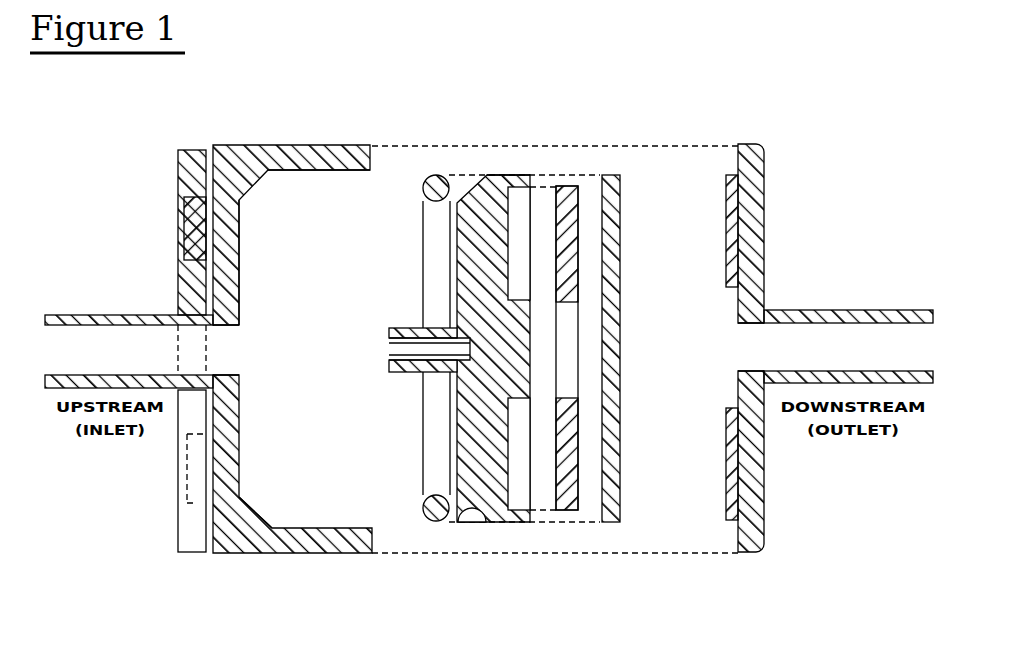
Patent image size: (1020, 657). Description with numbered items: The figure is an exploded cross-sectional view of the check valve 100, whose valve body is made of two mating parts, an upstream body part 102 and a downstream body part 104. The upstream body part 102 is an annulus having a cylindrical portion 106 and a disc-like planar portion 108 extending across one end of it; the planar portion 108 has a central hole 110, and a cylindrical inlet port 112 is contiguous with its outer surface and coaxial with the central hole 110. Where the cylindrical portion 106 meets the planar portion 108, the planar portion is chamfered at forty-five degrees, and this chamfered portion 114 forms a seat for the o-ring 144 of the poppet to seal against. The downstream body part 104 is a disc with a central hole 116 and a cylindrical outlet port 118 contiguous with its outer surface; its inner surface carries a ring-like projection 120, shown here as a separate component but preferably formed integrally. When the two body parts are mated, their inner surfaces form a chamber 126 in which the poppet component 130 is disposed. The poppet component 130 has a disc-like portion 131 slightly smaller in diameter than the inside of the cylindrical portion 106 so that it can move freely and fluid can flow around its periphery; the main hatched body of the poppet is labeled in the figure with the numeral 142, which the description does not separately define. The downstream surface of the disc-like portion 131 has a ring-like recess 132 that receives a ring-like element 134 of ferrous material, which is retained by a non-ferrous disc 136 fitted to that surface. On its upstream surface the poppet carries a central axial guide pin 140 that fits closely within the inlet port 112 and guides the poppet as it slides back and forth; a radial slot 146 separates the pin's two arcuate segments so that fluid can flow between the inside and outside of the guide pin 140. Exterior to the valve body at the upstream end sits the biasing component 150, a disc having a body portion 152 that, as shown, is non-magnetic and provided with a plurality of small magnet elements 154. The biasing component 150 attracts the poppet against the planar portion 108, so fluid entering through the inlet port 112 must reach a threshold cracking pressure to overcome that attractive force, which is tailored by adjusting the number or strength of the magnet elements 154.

The check valve 100 is at (321, 60).
The upstream body part 102 is at (320, 136).
The downstream body part 104 is at (752, 136).
The cylindrical portion 106 is at (288, 172).
The disc-like planar portion 108 is at (239, 275).
The central hole 110 is at (239, 325).
The cylindrical inlet port 112 is at (52, 314).
The chamfered portion 114 is at (254, 512).
The central hole 116 is at (750, 325).
The cylindrical outlet port 118 is at (813, 310).
The ring-like projection 120 is at (726, 245).
The chamber 126 is at (332, 444).
The poppet component 130 is at (633, 560).
The disc-like portion 131 is at (497, 175).
The ring-like recess 132 is at (533, 195).
The ring-like element 134 is at (565, 187).
The disc 136 is at (612, 175).
The guide pin 140 is at (412, 328).
The valve body block 142 is at (472, 200).
The o-ring 144 is at (436, 175).
The radial slot 146 is at (380, 350).
The biasing component 150 is at (188, 140).
The body portion 152 is at (176, 283).
The magnet elements 154 is at (176, 215).